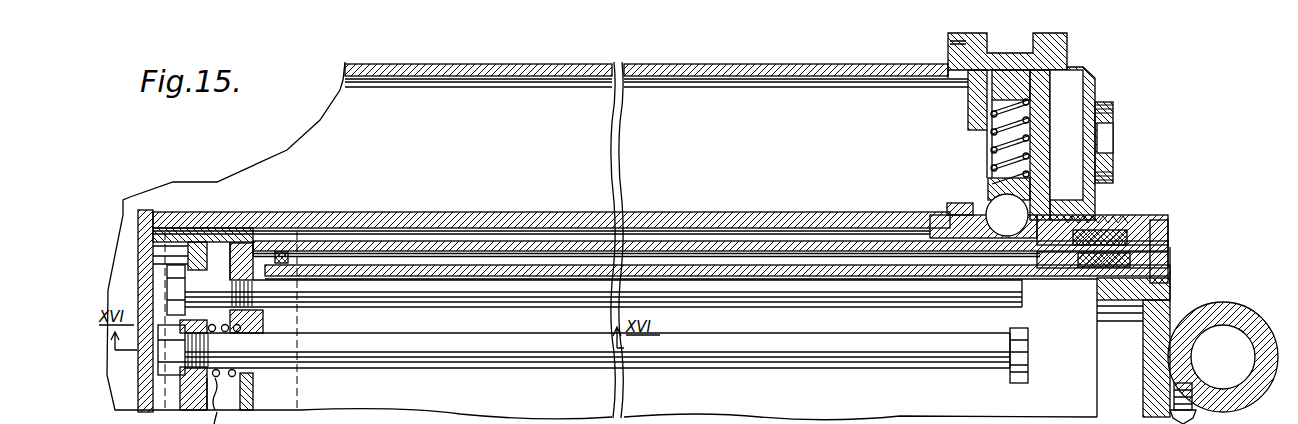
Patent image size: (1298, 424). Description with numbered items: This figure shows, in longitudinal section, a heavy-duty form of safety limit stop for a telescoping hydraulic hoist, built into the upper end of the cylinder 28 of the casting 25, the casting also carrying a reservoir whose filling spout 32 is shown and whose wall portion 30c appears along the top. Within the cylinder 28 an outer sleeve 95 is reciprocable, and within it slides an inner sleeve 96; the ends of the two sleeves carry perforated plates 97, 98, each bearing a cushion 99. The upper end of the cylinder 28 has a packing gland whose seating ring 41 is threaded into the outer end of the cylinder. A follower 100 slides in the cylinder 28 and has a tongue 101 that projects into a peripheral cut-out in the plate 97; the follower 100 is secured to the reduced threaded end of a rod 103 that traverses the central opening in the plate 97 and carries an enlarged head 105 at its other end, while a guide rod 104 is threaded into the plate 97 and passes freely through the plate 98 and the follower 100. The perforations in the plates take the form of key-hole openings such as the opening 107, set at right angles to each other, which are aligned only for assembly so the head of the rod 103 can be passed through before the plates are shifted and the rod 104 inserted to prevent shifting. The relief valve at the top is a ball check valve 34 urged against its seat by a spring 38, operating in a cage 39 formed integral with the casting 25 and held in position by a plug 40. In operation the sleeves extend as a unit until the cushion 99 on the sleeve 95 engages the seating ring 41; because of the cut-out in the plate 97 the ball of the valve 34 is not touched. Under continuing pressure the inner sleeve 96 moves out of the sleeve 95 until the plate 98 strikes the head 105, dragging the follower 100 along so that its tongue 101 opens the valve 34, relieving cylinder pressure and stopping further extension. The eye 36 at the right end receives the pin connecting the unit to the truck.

The cylinder 28 is at (551, 208).
The outer tube section 30c is at (478, 64).
The casting 25 is at (796, 62).
The outer sleeve 95 is at (710, 220).
The cushion 99 is at (646, 223).
The inner sleeve 96 is at (717, 234).
The perforated plate 97 is at (293, 226).
The follower 100 is at (203, 234).
The tongue 101 is at (250, 234).
The perforated plate 98 is at (278, 321).
The key-hole opening 107 is at (289, 391).
The guide rod 104 is at (594, 297).
The rod 103 is at (584, 343).
The enlarged head 105 is at (1010, 368).
The eye 36 is at (1223, 342).
The plug 40 is at (1026, 55).
The spring 38 is at (980, 135).
The cage 39 is at (1092, 143).
The filling spout 32 is at (1126, 142).
The ball check valve 34 is at (979, 202).
The seating ring 41 is at (1102, 232).